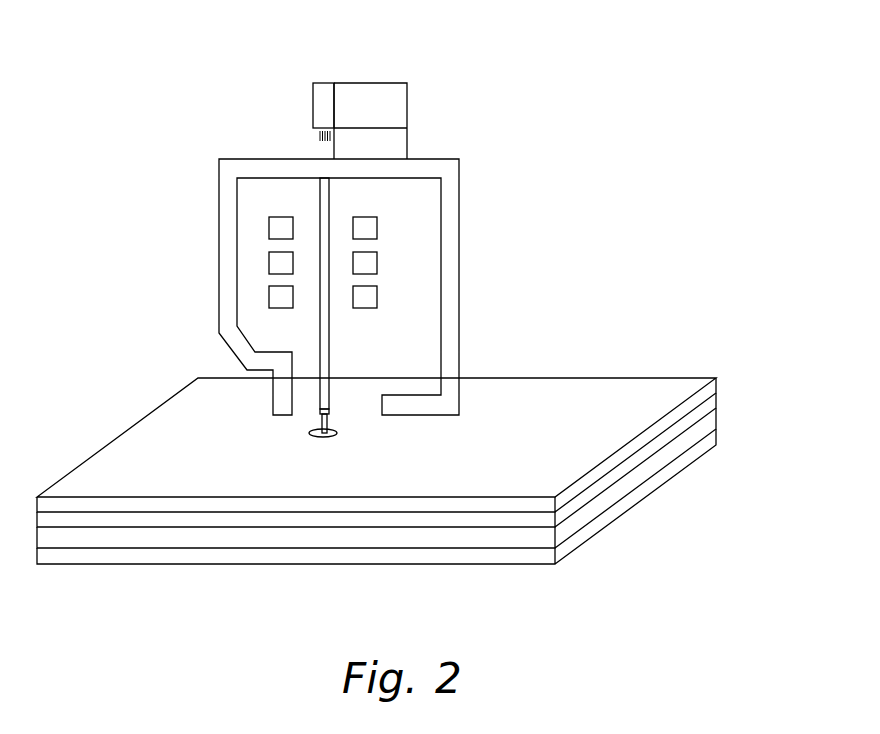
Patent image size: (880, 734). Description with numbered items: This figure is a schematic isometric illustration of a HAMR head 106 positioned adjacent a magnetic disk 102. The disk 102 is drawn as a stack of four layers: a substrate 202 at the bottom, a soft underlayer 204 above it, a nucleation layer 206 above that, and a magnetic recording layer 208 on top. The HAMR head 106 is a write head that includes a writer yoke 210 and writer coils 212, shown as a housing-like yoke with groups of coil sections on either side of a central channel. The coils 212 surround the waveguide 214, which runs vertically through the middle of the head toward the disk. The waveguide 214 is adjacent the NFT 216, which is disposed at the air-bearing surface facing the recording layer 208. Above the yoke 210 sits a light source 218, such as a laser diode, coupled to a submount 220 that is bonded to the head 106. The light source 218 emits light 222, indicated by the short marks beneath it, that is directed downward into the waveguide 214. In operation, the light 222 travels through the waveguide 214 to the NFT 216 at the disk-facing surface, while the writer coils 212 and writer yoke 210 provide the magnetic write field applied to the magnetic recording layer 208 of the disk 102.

The magnetic disk 102 is at (108, 362).
The HAMR head 106 is at (400, 244).
The substrate 202 is at (710, 440).
The soft underlayer 204 is at (710, 423).
The nucleation layer 206 is at (710, 403).
The magnetic recording layer 208 is at (710, 390).
The writer yoke 210 is at (426, 165).
The writer coils 212 is at (368, 226).
The waveguide 214 is at (325, 345).
The NFT 216 is at (327, 420).
The light source 218 is at (324, 90).
The submount 220 is at (374, 90).
The light 222 is at (318, 136).